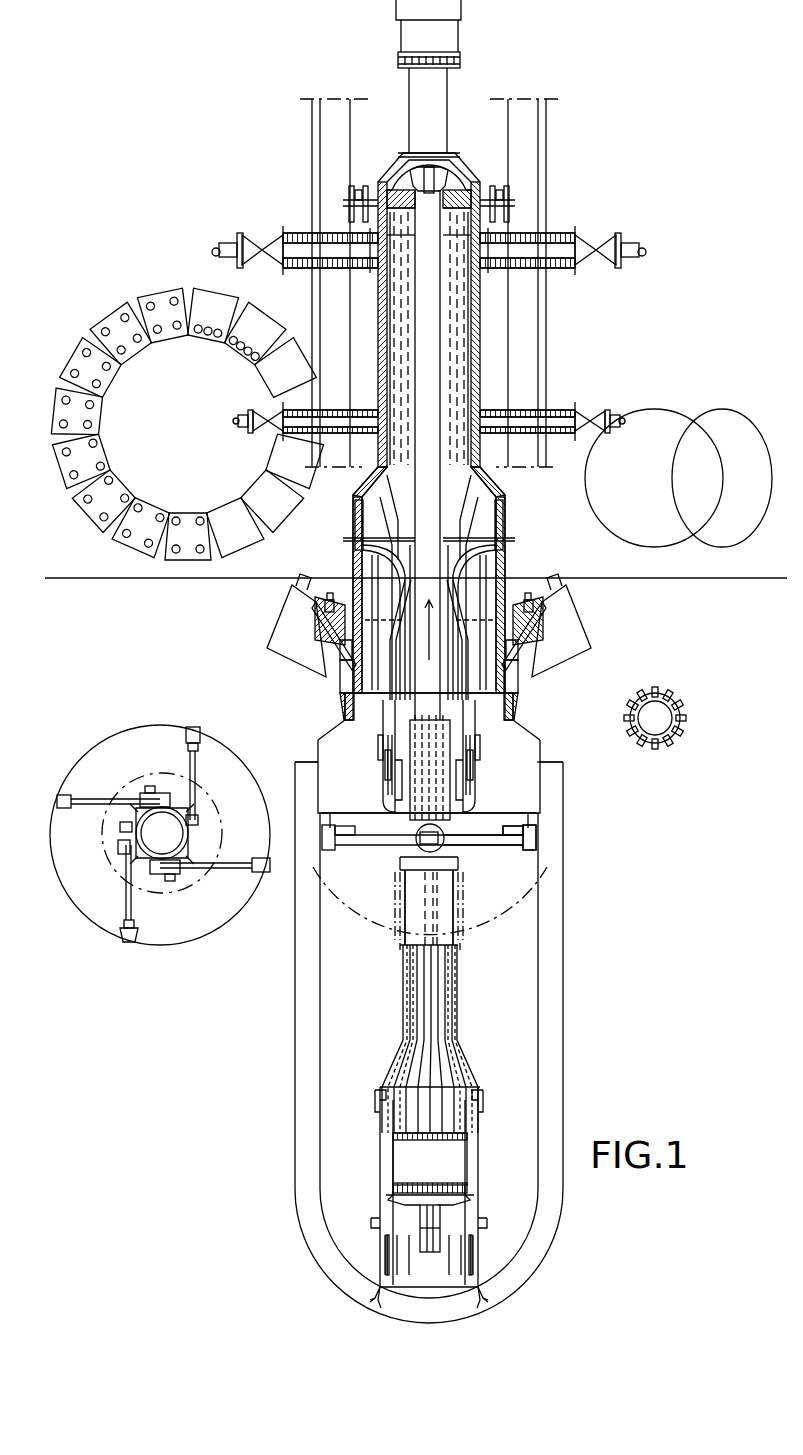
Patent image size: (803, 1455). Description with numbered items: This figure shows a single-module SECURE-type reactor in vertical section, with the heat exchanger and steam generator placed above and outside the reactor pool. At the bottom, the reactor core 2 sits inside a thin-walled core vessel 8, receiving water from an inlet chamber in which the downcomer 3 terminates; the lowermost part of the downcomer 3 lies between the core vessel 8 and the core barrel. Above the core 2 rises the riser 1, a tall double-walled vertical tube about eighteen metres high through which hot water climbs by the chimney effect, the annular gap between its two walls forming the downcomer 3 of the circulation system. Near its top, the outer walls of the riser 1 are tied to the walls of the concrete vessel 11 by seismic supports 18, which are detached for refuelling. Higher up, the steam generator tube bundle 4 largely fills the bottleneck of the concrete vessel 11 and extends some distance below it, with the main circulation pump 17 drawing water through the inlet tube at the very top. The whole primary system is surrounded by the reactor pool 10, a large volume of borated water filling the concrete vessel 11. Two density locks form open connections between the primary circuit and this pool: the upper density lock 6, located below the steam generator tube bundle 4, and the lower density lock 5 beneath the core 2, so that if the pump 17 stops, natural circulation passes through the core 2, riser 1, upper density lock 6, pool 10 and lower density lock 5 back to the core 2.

The riser 1 is at (440, 916).
The reactor core 2 is at (463, 1160).
The downcomer 3 is at (450, 970).
The steam generator tube bundle 4 is at (470, 343).
The lower density lock 5 is at (437, 1240).
The upper density lock 6 is at (465, 766).
The core vessel 8 is at (403, 993).
The reactor pool 10 is at (527, 993).
The concrete vessel 11 is at (598, 1064).
The main circulation pump 17 is at (440, 83).
The seismic supports 18 is at (500, 847).